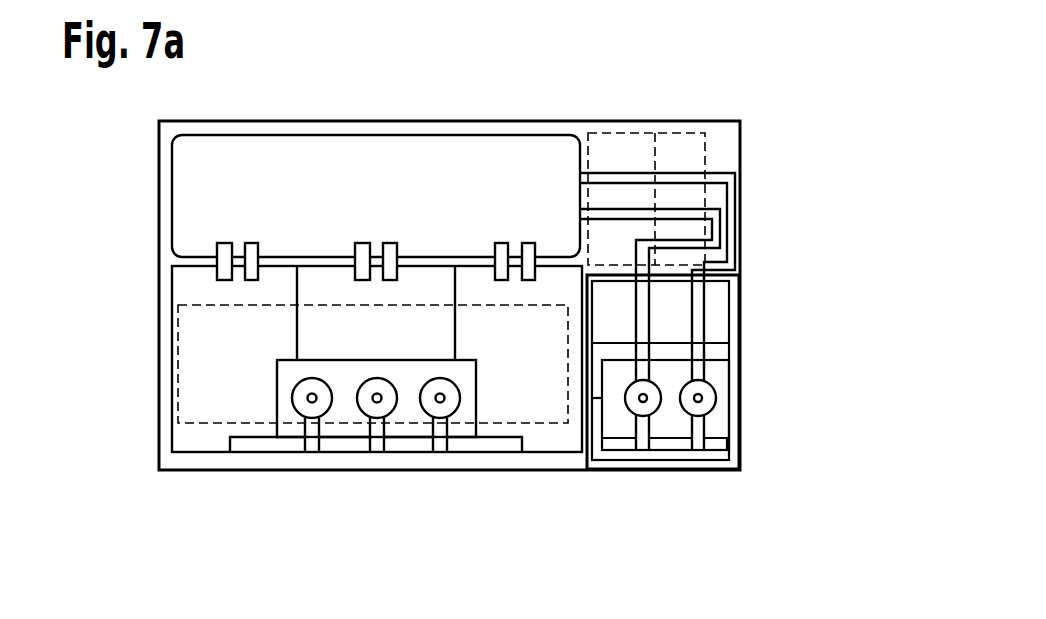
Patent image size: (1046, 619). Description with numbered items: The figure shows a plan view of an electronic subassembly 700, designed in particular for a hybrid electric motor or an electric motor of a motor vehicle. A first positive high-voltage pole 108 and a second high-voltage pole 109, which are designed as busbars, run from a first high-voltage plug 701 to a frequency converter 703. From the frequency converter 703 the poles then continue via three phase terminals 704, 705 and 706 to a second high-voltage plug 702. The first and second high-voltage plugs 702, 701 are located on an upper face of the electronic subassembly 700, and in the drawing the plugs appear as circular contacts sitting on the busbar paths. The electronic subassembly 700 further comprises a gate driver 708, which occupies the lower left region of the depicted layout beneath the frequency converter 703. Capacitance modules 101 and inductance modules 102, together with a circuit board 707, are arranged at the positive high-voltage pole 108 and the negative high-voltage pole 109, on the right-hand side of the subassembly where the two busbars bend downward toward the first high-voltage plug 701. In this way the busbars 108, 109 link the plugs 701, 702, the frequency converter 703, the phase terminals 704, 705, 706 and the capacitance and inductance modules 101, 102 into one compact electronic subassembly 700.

The electronic subassembly 700 is at (790, 100).
The frequency converter 703 is at (368, 143).
The capacitance module 101 is at (612, 143).
The inductance module 102 is at (682, 143).
The first positive high-voltage pole 108 is at (730, 208).
The second high-voltage pole 109 is at (727, 240).
The first high-voltage plug 701 is at (705, 403).
The circuit board 707 is at (730, 443).
The gate driver 708 is at (197, 355).
The phase terminal 704 is at (197, 440).
The second high-voltage plug 702 is at (347, 407).
The phase terminal 705 is at (412, 445).
The phase terminal 706 is at (550, 438).